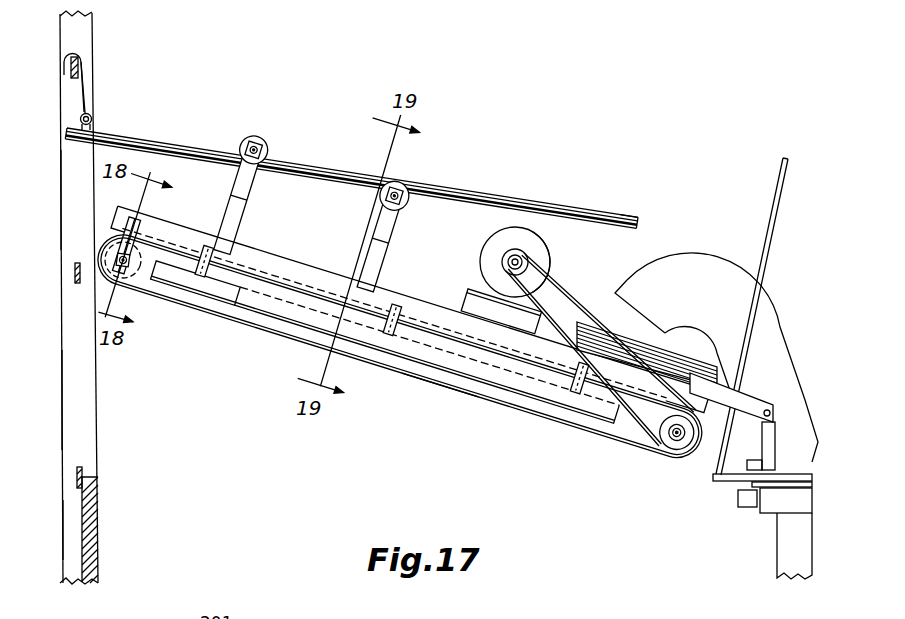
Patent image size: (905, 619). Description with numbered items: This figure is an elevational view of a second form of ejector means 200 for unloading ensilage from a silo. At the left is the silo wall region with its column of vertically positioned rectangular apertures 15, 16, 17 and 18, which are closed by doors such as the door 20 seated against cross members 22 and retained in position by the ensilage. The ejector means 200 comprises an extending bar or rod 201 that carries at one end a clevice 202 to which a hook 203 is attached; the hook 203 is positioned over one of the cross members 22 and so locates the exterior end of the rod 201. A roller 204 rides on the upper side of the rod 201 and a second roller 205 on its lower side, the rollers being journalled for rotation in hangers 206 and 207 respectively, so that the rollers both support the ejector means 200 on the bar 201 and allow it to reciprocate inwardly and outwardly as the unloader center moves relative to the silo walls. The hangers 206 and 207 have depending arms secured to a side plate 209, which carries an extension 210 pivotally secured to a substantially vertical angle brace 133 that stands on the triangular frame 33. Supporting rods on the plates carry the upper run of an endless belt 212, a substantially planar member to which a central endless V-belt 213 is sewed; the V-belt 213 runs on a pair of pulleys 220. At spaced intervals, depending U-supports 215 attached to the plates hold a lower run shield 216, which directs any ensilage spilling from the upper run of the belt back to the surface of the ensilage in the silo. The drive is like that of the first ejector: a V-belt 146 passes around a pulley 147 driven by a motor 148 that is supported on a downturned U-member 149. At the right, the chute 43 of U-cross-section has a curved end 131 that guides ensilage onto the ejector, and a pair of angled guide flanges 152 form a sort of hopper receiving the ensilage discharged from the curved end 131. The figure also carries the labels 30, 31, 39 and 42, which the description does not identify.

The rectangular aperture 15 is at (65, 32).
The rectangular aperture 16 is at (65, 190).
The rectangular aperture 17 is at (72, 395).
The rectangular aperture 18 is at (70, 525).
The door 20 is at (95, 523).
The cross members 22 is at (68, 73).
The rod 30 is at (751, 316).
The rod 31 is at (779, 181).
The triangular frame 33 is at (733, 484).
The block 39 is at (782, 480).
The post 42 is at (770, 552).
The chute 43 is at (707, 258).
The curved end 131 is at (624, 283).
The vertical angle brace 133 is at (775, 435).
The V-belt 146 is at (556, 296).
The pulley 147 is at (512, 252).
The motor 148 is at (534, 243).
The downturned U-member 149 is at (465, 296).
The angled guide flanges 152 is at (642, 347).
The ejector means 200 is at (546, 196).
The bar or rod 201 is at (628, 214).
The clevice 202 is at (93, 119).
The hook 203 is at (86, 87).
The roller 204 is at (262, 142).
The second roller 205 is at (409, 200).
The hanger 206 is at (244, 218).
The hanger 207 is at (378, 265).
The side plate 209 is at (308, 266).
The extension 210 is at (748, 398).
The endless belt 212 is at (456, 388).
The central endless V-belt 213 is at (416, 380).
The depending U-supports 215 is at (202, 278).
The lower run shield 216 is at (498, 382).
The pulleys 220 is at (144, 250).